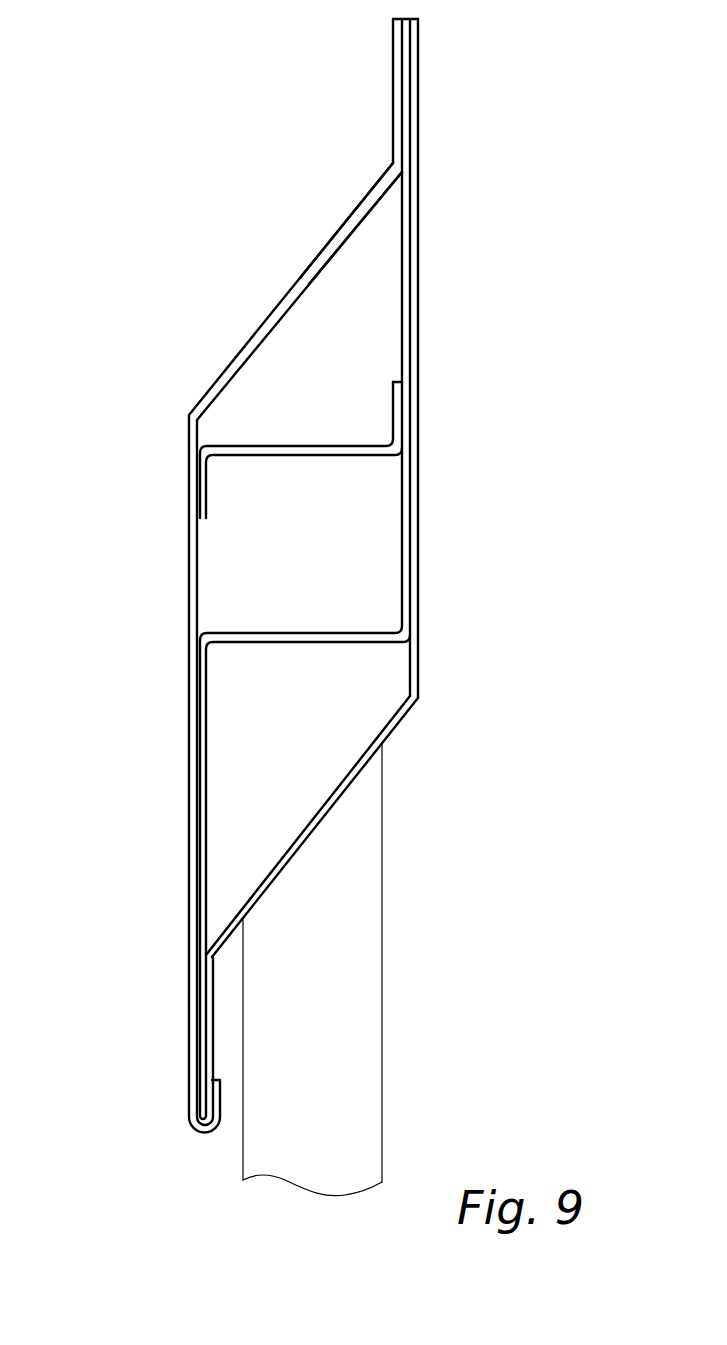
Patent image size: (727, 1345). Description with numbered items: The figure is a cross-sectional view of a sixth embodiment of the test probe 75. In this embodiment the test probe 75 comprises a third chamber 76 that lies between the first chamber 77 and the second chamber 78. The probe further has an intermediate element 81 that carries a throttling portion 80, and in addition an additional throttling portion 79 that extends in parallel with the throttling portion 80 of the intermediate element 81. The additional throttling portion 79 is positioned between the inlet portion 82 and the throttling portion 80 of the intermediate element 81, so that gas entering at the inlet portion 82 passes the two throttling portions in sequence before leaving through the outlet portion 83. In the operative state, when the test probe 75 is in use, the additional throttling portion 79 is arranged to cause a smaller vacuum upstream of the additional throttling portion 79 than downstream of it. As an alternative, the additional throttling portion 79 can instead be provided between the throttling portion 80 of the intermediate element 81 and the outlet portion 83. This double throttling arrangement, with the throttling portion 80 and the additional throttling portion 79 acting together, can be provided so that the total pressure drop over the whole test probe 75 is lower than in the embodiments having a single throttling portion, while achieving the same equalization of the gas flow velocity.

The test probe 75 is at (227, 576).
The third chamber 76 is at (218, 563).
The first chamber 77 is at (217, 427).
The second chamber 78 is at (232, 873).
The additional throttling portion 79 is at (295, 443).
The throttling portion 80 is at (348, 630).
The intermediate element 81 is at (401, 278).
The inlet portion 82 is at (418, 58).
The outlet portion 83 is at (330, 810).